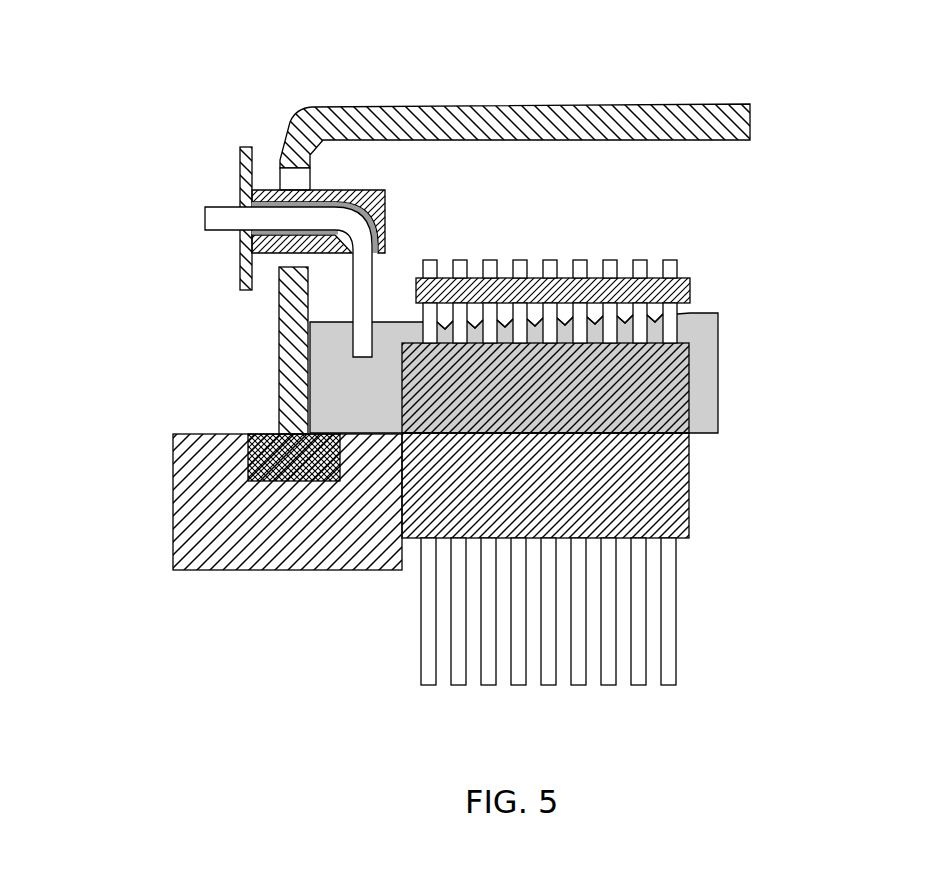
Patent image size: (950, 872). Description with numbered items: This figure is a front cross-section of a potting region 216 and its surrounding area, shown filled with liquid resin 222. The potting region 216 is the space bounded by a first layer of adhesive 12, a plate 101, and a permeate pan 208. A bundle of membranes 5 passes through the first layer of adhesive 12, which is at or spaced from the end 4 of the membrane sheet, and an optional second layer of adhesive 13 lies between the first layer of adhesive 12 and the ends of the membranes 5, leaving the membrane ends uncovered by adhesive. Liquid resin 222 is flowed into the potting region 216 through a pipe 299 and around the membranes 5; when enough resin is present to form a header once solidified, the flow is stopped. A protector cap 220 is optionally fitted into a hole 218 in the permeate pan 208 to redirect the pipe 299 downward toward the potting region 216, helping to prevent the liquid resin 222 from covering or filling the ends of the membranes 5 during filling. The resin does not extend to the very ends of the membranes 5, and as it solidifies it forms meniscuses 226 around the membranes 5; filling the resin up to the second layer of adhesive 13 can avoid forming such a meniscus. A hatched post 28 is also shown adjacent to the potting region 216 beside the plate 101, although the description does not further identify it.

The permeate pan 208 is at (293, 118).
The hole 218 is at (283, 167).
The protector cap 220 is at (240, 157).
The pipe 299 is at (237, 220).
The post 28 is at (279, 343).
The liquid resin 222 is at (342, 378).
The potting region 216 is at (375, 400).
The plate 101 is at (181, 542).
The end of the sheet 4 is at (667, 258).
The second layer of adhesive 13 is at (690, 287).
The meniscuses 226 is at (660, 316).
The first layer of adhesive 12 is at (630, 498).
The membranes 5 is at (669, 657).